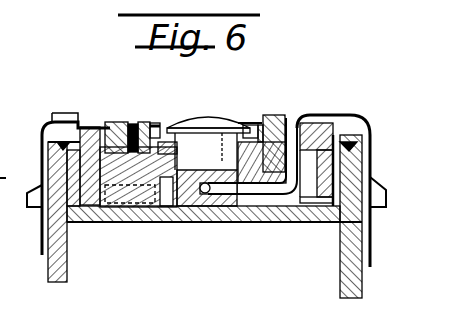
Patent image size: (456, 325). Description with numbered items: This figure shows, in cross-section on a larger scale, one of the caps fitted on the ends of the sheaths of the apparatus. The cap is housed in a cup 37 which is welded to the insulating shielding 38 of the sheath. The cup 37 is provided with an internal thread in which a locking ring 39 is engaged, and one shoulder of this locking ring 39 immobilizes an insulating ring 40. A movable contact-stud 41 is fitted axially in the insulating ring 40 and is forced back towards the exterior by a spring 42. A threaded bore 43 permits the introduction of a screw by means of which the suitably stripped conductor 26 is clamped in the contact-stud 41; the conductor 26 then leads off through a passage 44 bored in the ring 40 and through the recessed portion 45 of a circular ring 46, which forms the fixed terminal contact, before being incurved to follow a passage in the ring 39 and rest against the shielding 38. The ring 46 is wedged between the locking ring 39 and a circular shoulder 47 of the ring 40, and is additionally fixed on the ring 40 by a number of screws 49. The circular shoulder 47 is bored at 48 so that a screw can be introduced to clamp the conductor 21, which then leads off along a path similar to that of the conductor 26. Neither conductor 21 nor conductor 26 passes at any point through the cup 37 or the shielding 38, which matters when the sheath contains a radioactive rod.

The conductor 21 is at (52, 138).
The conductor 26 is at (350, 127).
The cup 37 is at (206, 222).
The insulating shielding 38 is at (55, 260).
The locking ring 39 is at (92, 126).
The insulating ring 40 is at (156, 123).
The movable contact-stud 41 is at (205, 118).
The spring 42 is at (246, 123).
The threaded bore 43 is at (225, 224).
The passage 44 is at (309, 187).
The recessed portion 45 is at (301, 126).
The circular ring 46 is at (283, 116).
The circular shoulder 47 is at (152, 123).
The bore 48 is at (127, 124).
The screws 49 is at (132, 222).